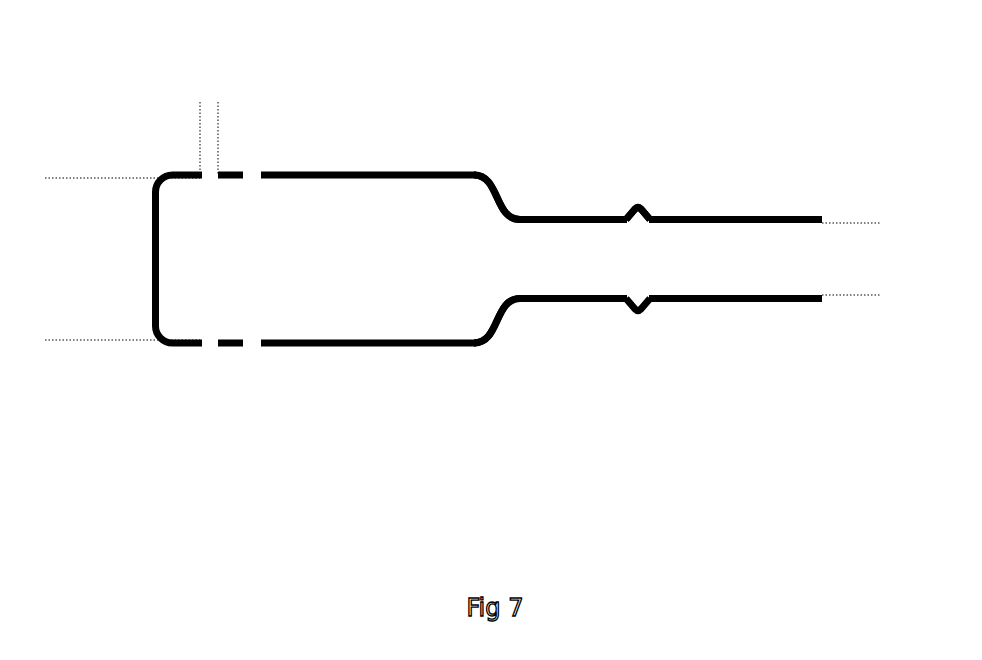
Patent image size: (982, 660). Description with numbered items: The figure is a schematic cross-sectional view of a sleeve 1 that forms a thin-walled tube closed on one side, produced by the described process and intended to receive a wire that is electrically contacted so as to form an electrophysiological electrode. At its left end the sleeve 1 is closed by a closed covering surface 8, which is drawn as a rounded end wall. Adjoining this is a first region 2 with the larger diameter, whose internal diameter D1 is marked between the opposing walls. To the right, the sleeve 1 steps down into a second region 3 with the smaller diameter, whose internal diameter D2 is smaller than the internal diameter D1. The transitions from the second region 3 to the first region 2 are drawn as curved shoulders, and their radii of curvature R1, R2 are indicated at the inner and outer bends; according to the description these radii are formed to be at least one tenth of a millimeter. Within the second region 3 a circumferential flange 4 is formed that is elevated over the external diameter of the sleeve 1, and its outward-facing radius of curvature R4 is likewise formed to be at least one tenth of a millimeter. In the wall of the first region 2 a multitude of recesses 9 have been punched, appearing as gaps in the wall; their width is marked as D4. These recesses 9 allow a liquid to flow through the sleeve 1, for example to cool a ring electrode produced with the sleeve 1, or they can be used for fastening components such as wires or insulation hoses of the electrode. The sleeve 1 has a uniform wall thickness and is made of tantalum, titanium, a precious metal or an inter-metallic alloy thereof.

The sleeve 1 is at (453, 277).
The first region 2 is at (271, 174).
The second region 3 is at (778, 216).
The flange 4 is at (639, 206).
The closed covering surface 8 is at (152, 247).
The recesses 9 is at (251, 176).
The radius of curvature R1 is at (508, 208).
The radius of curvature R2 is at (493, 170).
The outward-facing radius of curvature of the flange R4 is at (651, 208).
The internal diameter of the first region D1 is at (67, 160).
The internal diameter of the second region D2 is at (853, 203).
The slot width D4 is at (233, 123).